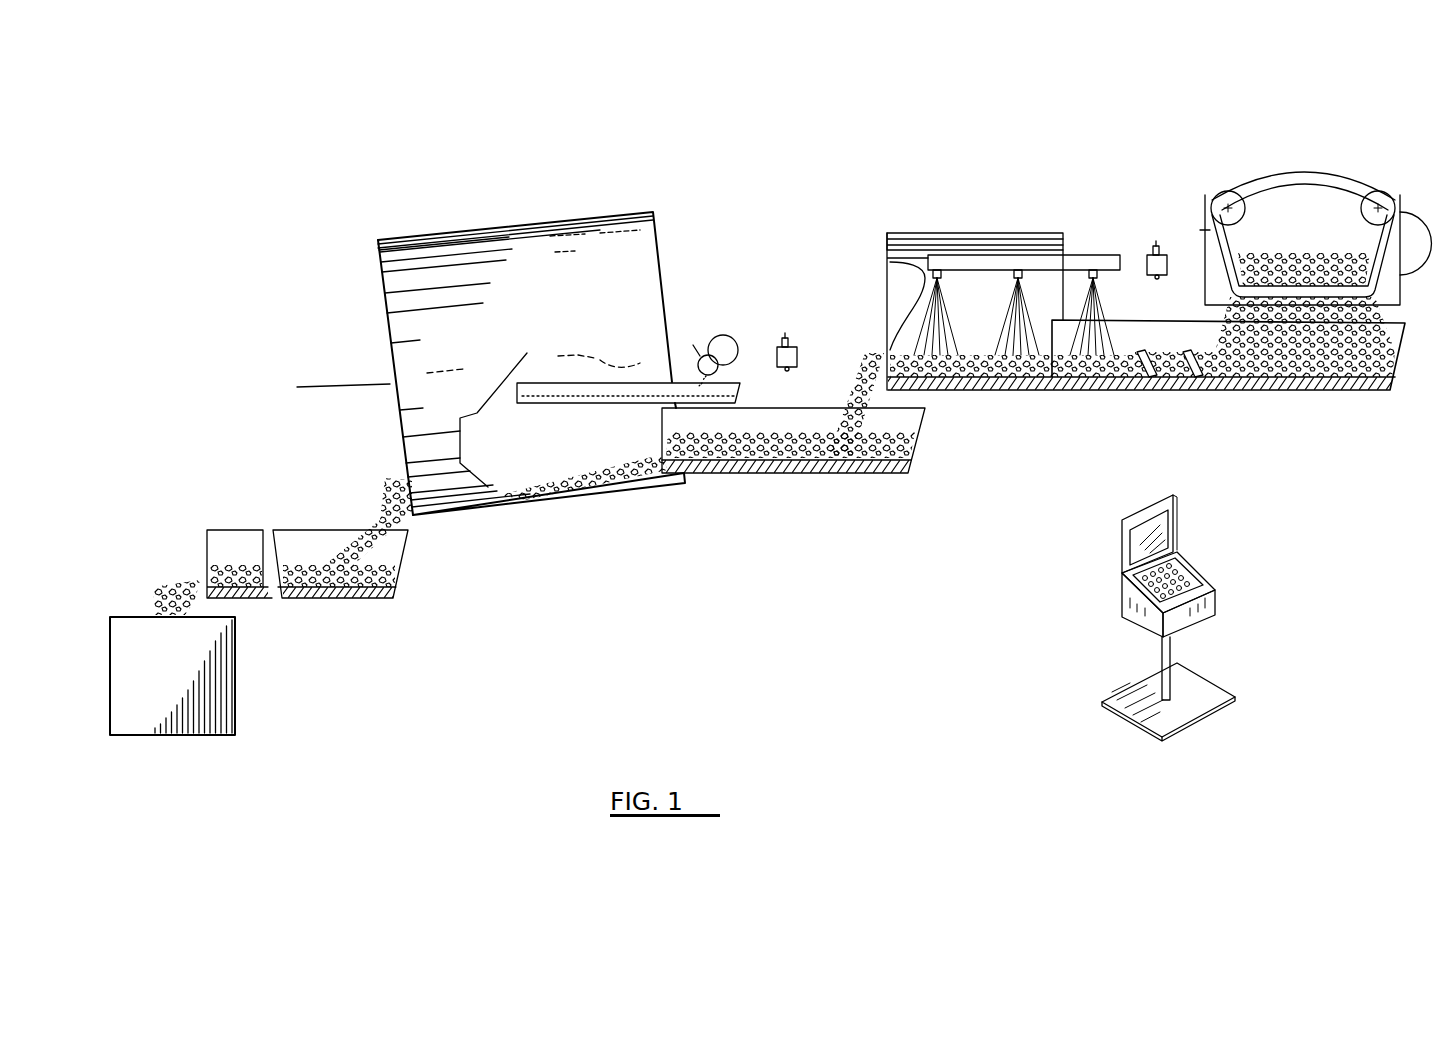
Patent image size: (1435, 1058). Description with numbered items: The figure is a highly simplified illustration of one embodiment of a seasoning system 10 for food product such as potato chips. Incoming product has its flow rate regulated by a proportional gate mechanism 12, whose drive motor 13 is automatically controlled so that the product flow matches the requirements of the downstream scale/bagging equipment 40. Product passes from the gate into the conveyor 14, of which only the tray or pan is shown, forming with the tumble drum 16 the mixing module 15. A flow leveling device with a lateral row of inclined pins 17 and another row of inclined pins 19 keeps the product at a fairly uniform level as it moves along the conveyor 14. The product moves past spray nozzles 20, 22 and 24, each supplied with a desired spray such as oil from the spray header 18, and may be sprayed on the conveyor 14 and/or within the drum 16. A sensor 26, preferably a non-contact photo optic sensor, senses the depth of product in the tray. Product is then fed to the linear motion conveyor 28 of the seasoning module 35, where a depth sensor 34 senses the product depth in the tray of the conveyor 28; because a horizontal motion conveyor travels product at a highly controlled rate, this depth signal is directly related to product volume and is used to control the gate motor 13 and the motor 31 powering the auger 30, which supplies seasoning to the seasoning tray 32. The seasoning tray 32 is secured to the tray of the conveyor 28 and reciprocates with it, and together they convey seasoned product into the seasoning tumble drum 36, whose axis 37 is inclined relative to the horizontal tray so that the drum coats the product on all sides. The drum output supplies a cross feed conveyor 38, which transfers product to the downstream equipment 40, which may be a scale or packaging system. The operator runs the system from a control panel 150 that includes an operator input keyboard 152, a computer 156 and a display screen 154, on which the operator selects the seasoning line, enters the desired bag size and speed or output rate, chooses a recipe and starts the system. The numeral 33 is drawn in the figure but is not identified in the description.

The seasoning system 10 is at (721, 208).
The gate mechanism 12 is at (1245, 190).
The drive motor 13 is at (1410, 197).
The conveyor 14 is at (1310, 385).
The mixing module 15 is at (1112, 170).
The tumble drum 16 is at (905, 240).
The inclined pins 17 is at (1197, 378).
The spray header 18 is at (1020, 262).
The inclined pins 19 is at (1142, 378).
The spray nozzle 20 is at (933, 272).
The spray nozzle 22 is at (1013, 272).
The spray nozzle 24 is at (1097, 280).
The sensor 26 is at (1152, 252).
The linear motion conveyor 28 is at (913, 440).
The auger 30 is at (609, 341).
The motor 31 is at (740, 338).
The seasoning tray 32 is at (740, 393).
The product stream 33 is at (727, 297).
The depth sensor 34 is at (797, 347).
The seasoning module 35 is at (472, 178).
The seasoning tumble drum 36 is at (380, 240).
The axis 37 is at (350, 385).
The cross feed conveyor 38 is at (195, 500).
The downstream equipment 40 is at (235, 655).
The control panel 150 is at (1078, 646).
The operator input keyboard 152 is at (1197, 570).
The display screen 154 is at (1175, 513).
The computer 156 is at (1218, 603).